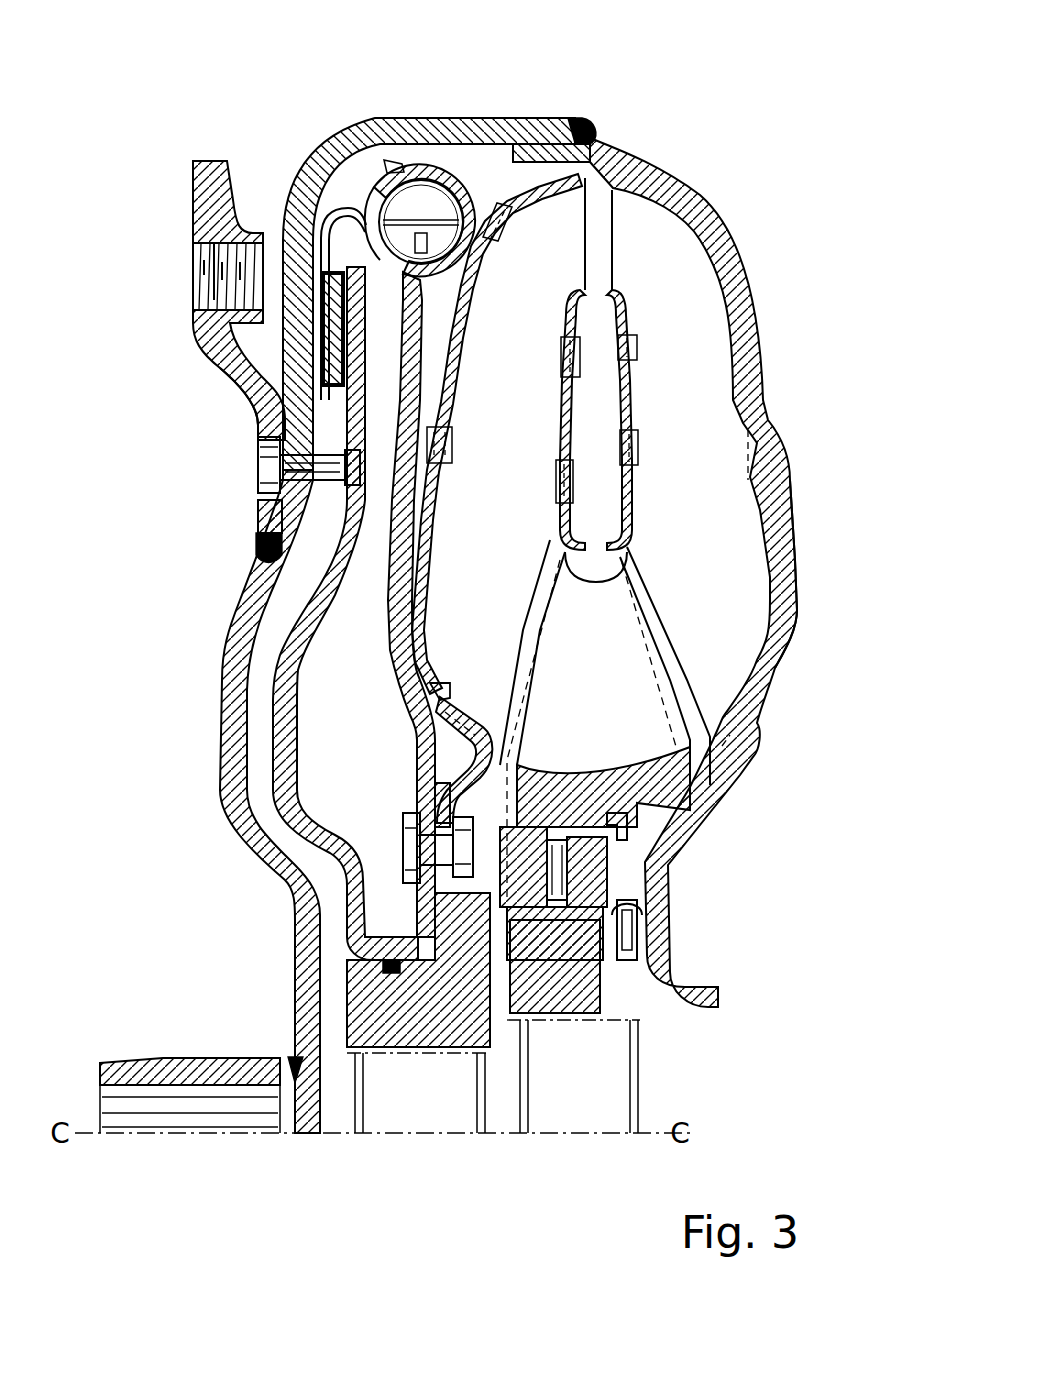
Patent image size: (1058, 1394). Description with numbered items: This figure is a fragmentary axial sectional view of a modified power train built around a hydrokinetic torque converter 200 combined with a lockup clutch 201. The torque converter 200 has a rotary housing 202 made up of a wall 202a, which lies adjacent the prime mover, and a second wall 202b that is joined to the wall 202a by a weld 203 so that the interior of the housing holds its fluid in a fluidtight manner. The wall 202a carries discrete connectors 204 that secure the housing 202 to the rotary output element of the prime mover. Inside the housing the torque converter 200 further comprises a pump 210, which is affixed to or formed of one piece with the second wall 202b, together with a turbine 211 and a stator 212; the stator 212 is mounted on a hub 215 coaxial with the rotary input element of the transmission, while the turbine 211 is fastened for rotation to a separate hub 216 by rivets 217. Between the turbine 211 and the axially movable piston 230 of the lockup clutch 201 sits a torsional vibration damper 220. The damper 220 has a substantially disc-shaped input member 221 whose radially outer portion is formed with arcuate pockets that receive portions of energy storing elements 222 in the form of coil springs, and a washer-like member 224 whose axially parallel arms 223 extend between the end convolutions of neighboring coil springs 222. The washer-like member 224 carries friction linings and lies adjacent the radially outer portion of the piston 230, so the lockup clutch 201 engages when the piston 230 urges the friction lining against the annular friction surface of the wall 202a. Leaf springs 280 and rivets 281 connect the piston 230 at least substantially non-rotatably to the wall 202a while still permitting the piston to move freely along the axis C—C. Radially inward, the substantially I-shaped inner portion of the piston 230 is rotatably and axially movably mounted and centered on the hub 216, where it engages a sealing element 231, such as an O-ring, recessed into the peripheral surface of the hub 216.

The hydrokinetic torque converter 200 is at (775, 157).
The lockup clutch 201 is at (395, 100).
The rotary housing 202 is at (752, 262).
The wall 202a is at (235, 700).
The second wall 202b is at (773, 665).
The weld 203 is at (580, 130).
The connectors 204 is at (200, 323).
The pump 210 is at (665, 462).
The turbine 211 is at (530, 462).
The stator 212 is at (583, 700).
The hub 215 is at (592, 880).
The hub 216 is at (373, 1017).
The rivets 217 is at (408, 842).
The torsional vibration damper 220 is at (507, 100).
The input member 221 is at (388, 662).
The energy storing elements 222 is at (420, 180).
The arms 223 is at (352, 212).
The washer-like member 224 is at (322, 260).
The piston 230 is at (280, 415).
The sealing element 231 is at (392, 975).
The leaf springs 280 is at (277, 526).
The rivets 281 is at (327, 462).